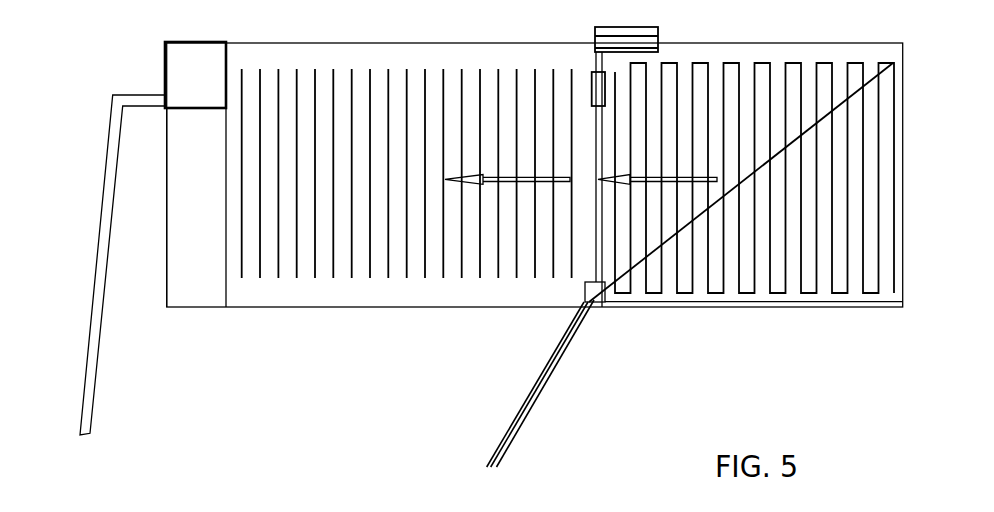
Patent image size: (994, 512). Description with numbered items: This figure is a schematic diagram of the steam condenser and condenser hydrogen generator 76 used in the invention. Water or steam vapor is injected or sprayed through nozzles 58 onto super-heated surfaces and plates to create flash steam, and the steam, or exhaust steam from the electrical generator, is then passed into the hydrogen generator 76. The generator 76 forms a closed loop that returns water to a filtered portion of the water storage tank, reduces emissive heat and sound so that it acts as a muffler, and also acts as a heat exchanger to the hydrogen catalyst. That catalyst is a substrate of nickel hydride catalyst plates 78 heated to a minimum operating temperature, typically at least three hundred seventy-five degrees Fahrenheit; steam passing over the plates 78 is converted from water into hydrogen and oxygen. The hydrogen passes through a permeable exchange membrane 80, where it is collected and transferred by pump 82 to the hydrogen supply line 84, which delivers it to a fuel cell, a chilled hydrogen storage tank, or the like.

The nozzles 58 is at (589, 183).
The condenser hydrogen generator 76 is at (379, 353).
The nickel hydride catalyst plates 78 is at (407, 210).
The permeable exchange membrane 80 is at (184, 230).
The pump 82 is at (211, 54).
The hydrogen supply line 84 is at (102, 265).